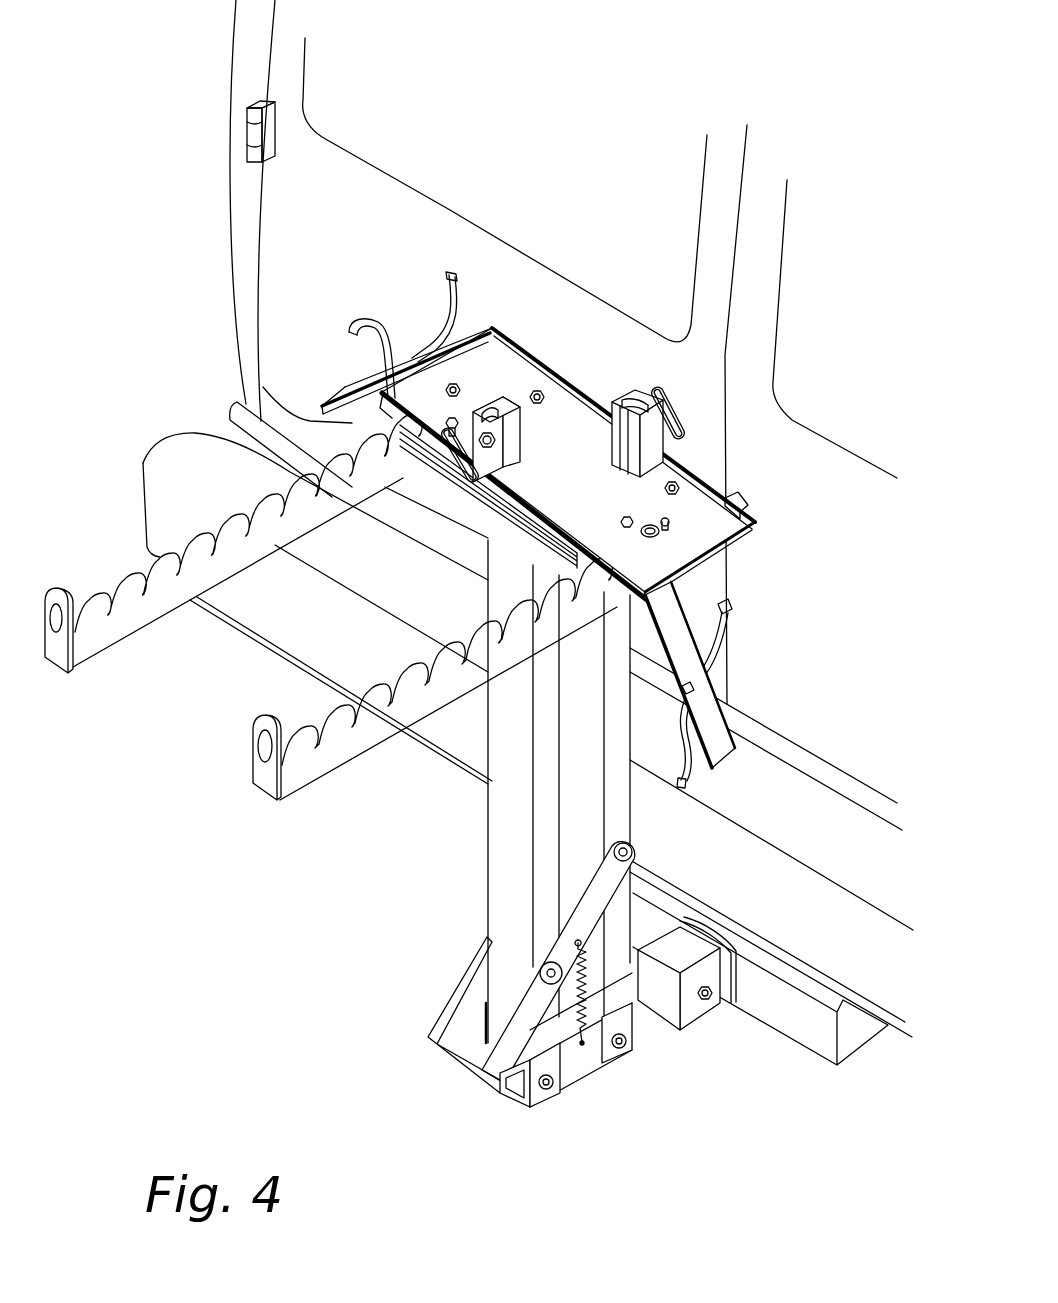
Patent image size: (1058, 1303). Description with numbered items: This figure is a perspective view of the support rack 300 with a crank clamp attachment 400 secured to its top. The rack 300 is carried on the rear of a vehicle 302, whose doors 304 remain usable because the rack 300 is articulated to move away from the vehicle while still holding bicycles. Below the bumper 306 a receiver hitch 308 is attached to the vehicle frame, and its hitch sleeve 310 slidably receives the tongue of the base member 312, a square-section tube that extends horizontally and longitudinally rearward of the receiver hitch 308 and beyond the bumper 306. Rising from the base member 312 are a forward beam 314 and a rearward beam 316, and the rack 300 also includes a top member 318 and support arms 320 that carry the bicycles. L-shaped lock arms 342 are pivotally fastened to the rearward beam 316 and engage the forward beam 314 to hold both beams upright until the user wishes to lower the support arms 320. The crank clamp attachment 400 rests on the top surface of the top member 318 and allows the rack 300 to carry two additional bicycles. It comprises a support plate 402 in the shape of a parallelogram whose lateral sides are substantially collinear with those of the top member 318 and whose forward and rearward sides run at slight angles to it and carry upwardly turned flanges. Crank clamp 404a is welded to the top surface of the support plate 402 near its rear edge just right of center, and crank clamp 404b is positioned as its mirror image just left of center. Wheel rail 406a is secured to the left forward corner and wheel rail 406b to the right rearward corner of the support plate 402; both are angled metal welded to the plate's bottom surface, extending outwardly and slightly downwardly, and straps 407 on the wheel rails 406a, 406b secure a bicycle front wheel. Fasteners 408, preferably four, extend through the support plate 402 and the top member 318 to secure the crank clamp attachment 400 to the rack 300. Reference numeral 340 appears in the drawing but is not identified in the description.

The support rack 300 is at (224, 1004).
The vehicle 302 is at (226, 65).
The doors 304 is at (305, 215).
The bumper 306 is at (186, 466).
The receiver hitch 308 is at (814, 1062).
The hitch sleeve 310 is at (693, 1010).
The base member 312 is at (592, 1076).
The forward beam 314 is at (617, 793).
The rearward beam 316 is at (505, 880).
The top member 318 is at (244, 408).
The support arms 320 is at (108, 588).
The fastener 340 is at (466, 385).
The lock arms 342 is at (472, 997).
The crank clamp attachment 400 is at (590, 382).
The support plate 402 is at (593, 425).
The crank clamp 404a is at (684, 406).
The crank clamp 404b is at (380, 420).
The wheel rail 406a is at (364, 376).
The wheel rail 406b is at (714, 730).
The straps 407 is at (442, 292).
The fasteners 408 is at (538, 392).